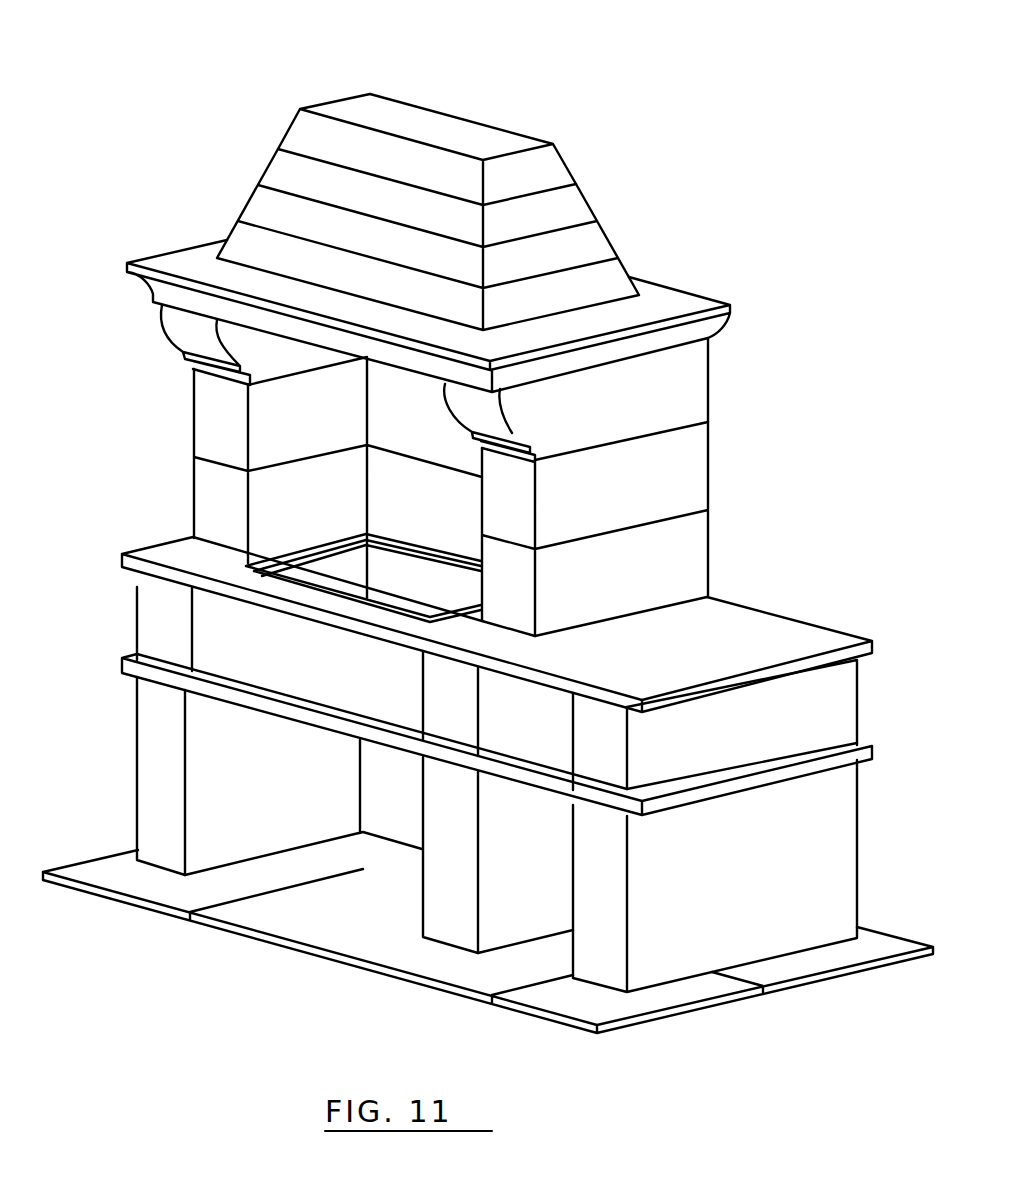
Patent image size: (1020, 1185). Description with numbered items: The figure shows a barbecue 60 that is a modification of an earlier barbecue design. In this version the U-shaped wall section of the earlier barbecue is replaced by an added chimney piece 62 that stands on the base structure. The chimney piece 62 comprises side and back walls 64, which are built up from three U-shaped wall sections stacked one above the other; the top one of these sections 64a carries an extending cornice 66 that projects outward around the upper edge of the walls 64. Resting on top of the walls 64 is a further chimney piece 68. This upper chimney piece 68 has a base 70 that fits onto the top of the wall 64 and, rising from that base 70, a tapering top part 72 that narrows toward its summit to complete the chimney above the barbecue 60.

The barbecue 60 is at (812, 611).
The chimney piece 62 is at (675, 263).
The side and back walls 64 is at (677, 476).
The top U-shaped wall section 64a is at (687, 398).
The extending cornice 66 is at (458, 408).
The chimney piece 68 is at (572, 207).
The base 70 is at (700, 335).
The tapering top part 72 is at (472, 132).